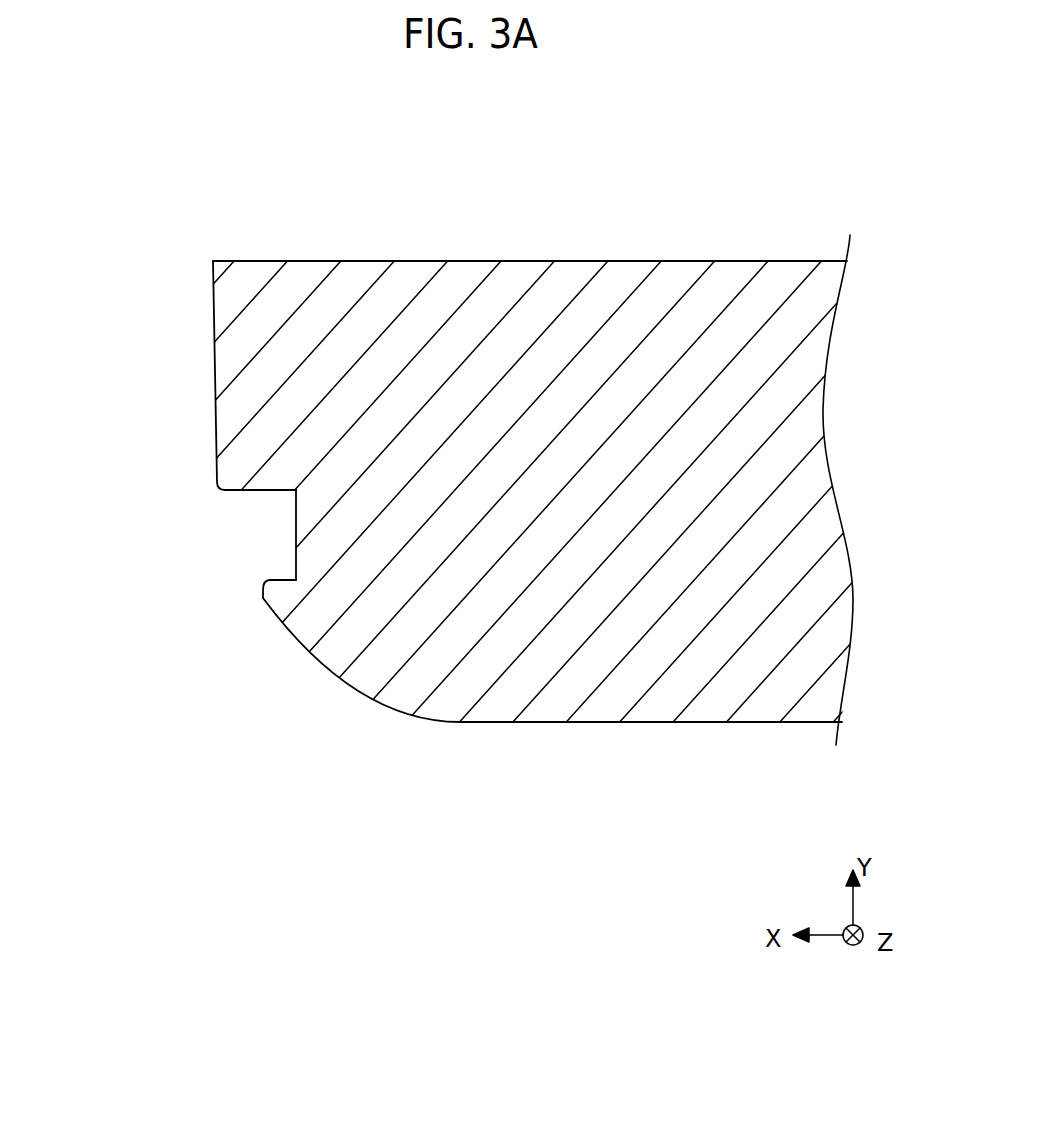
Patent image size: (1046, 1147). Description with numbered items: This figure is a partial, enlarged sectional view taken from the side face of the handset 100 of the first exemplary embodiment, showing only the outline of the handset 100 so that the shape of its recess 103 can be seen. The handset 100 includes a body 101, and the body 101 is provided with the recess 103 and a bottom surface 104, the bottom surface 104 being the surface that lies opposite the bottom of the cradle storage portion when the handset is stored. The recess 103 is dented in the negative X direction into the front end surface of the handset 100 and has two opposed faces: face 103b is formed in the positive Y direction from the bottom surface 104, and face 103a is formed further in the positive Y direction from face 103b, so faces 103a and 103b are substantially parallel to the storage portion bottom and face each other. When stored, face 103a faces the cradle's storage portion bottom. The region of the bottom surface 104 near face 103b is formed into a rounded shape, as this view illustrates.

The handset 100 is at (577, 148).
The body 101 is at (687, 260).
The recess 103 is at (181, 544).
The face 103a is at (258, 496).
The face 103b is at (288, 582).
The bottom surface 104 is at (290, 637).